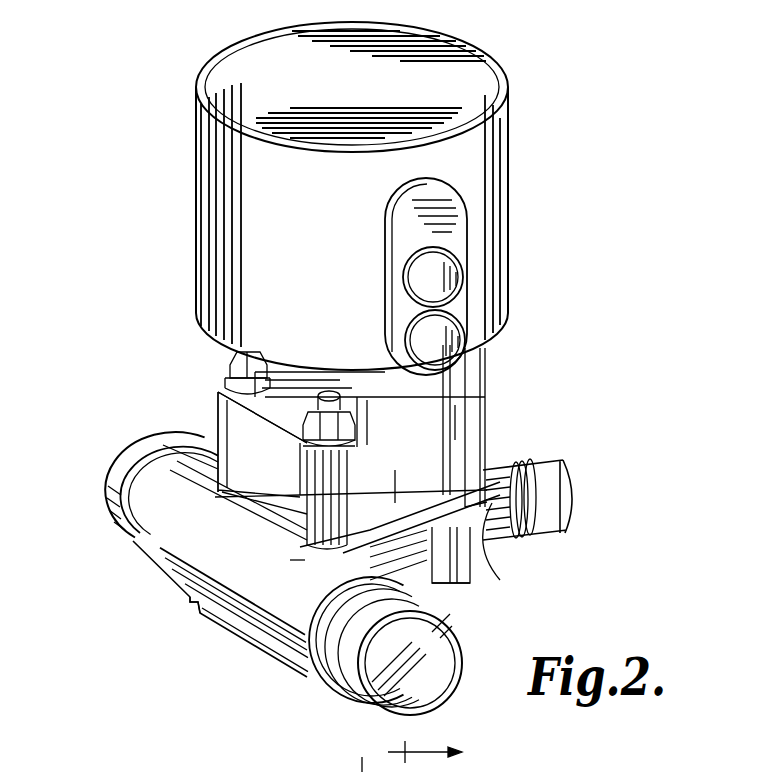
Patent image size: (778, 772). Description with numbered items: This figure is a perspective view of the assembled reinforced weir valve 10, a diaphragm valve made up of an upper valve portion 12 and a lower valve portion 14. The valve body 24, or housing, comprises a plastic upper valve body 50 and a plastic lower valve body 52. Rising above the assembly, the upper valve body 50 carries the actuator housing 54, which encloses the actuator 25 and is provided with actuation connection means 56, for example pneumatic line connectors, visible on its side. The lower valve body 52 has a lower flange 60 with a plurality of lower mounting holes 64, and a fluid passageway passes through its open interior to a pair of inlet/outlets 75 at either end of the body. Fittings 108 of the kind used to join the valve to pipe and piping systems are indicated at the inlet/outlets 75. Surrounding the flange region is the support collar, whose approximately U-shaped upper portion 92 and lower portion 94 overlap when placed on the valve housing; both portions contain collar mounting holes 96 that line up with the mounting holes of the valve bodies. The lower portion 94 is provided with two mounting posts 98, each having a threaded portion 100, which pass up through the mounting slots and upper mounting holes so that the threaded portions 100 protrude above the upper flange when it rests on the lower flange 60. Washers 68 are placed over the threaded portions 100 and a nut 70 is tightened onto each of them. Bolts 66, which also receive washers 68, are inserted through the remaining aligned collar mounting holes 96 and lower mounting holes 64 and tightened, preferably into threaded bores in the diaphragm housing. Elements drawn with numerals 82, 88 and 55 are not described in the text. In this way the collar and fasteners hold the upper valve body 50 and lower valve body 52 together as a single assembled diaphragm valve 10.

The reinforced weir valve 10 is at (502, 77).
The actuator 25 is at (260, 70).
The upper valve body 50 is at (325, 228).
The actuator housing 54 is at (508, 200).
The actuation connection means 56 is at (462, 298).
The upper valve portion 12 is at (486, 352).
The mounting posts 98 is at (447, 417).
The valve body 24 is at (445, 413).
The flange 82 is at (385, 507).
The mounting flange 88 is at (385, 507).
The nut 70 is at (237, 358).
The washers 68 is at (227, 386).
The threaded portion 100 is at (218, 410).
The lower valve body 52 is at (250, 559).
The inlet port 55 is at (162, 426).
The lower flange 60 is at (222, 492).
The lower mounting holes 64 is at (300, 553).
The collar mounting holes 96 is at (300, 540).
The inlet/outlets 75 is at (575, 493).
The upper portion 92 is at (567, 463).
The lower portion 94 is at (524, 537).
The fittings 108 is at (520, 553).
The bolts 66 is at (490, 557).
The lower valve portion 14 is at (462, 605).